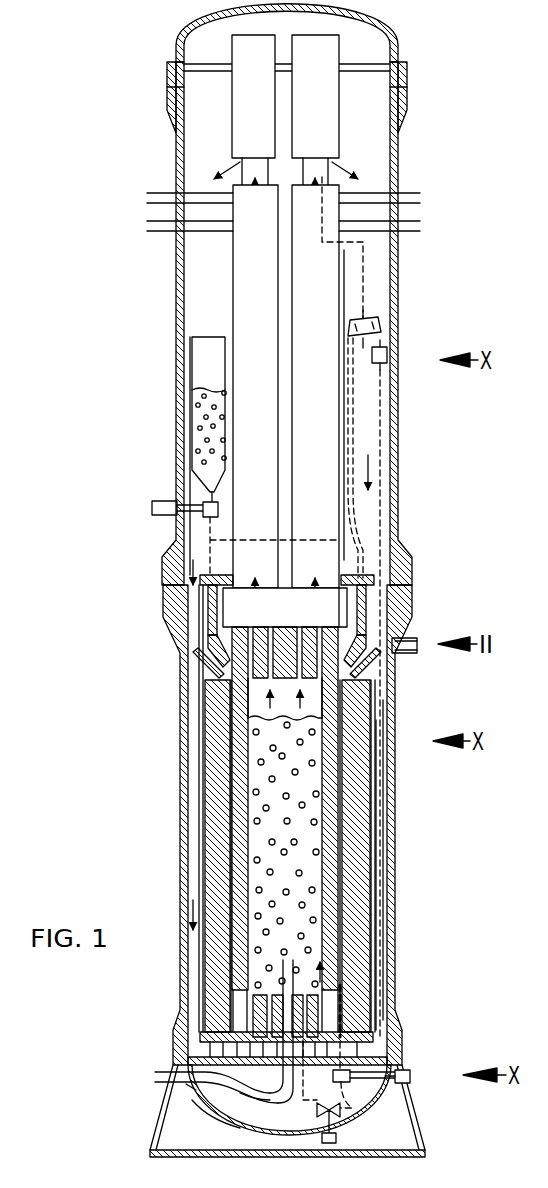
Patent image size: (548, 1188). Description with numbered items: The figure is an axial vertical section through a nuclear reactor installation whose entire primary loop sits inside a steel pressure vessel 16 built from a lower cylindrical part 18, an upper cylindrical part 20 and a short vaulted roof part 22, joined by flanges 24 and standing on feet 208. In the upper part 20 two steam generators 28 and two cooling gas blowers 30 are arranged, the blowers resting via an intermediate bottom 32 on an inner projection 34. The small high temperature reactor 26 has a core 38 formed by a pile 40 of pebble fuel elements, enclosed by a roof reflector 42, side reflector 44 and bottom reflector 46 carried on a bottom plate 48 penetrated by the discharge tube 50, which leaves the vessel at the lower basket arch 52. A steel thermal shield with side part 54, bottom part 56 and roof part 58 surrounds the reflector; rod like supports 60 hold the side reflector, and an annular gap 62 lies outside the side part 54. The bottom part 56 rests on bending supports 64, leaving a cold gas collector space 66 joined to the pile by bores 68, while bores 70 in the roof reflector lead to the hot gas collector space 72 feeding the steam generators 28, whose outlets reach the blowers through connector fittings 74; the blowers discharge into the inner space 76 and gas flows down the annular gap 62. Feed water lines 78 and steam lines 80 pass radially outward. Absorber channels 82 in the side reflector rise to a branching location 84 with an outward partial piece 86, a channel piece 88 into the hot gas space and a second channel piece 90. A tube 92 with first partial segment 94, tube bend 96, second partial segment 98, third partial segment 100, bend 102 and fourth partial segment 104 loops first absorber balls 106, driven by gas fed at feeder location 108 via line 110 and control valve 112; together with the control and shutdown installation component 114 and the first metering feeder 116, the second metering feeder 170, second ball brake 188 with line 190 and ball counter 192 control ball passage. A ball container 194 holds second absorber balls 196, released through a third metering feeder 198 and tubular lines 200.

The steel pressure vessel 16 is at (172, 385).
The lower cylindrical part 18 is at (396, 800).
The upper cylindrical part 20 is at (396, 458).
The vaulted roof part 22 is at (398, 40).
The flanges 24 is at (408, 96).
The small high temperature reactor 26 is at (256, 790).
The steam generators 28 is at (265, 287).
The cooling gas blowers 30 is at (263, 94).
The intermediate bottom 32 is at (212, 64).
The inner projection 34 is at (168, 78).
The core 38 is at (238, 818).
The pile 40 is at (245, 835).
The roof reflector 42 is at (262, 682).
The side reflector 44 is at (216, 735).
The bottom reflector 46 is at (242, 1005).
The bottom plate 48 is at (188, 1090).
The discharge tube 50 is at (155, 1076).
The lower basket arch 52 is at (192, 1110).
The side part of the thermal shield 54 is at (201, 860).
The bottom part of the thermal shield 56 is at (262, 994).
The roof part of the thermal shield 58 is at (206, 572).
The rod like supports 60 is at (368, 890).
The annular gap 62 is at (380, 915).
The bending supports 64 is at (230, 1058).
The cold gas collector space 66 is at (212, 1033).
The bores and channels 68 is at (297, 996).
The bores or channels 70 is at (218, 640).
The hot gas collector space 72 is at (253, 622).
The connector fittings 74 is at (259, 162).
The inner space 76 is at (380, 258).
The feed water lines 78 is at (147, 226).
The steam lines 80 is at (147, 196).
The absorber channels 82 is at (231, 760).
The branching location 84 is at (358, 700).
The partial piece 86 is at (200, 658).
The channel piece 88 is at (340, 626).
The second channel piece 90 is at (212, 617).
The tube 92 is at (386, 828).
The first partial segment 94 is at (345, 1052).
The tube bend 96 is at (351, 1080).
The second partial segment 98 is at (410, 1083).
The third partial segment 100 is at (353, 432).
The bend 102 is at (350, 326).
The fourth partial segment 104 is at (380, 392).
The first absorber balls 106 is at (342, 983).
The feeder location 108 is at (357, 1100).
The line 110 is at (242, 1112).
The control valve 112 is at (341, 1112).
The pipe 114 is at (370, 1073).
The first metering feeder 116 is at (413, 645).
The second metering feeder 170 is at (411, 1077).
The second ball brake 188 is at (380, 322).
The line 190 is at (366, 280).
The ball counter 192 is at (388, 356).
The ball container 194 is at (192, 352).
The second absorber balls 196 is at (195, 420).
The third metering feeder 198 is at (152, 507).
The tubular lines 200 is at (213, 526).
The feet 208 is at (420, 1145).